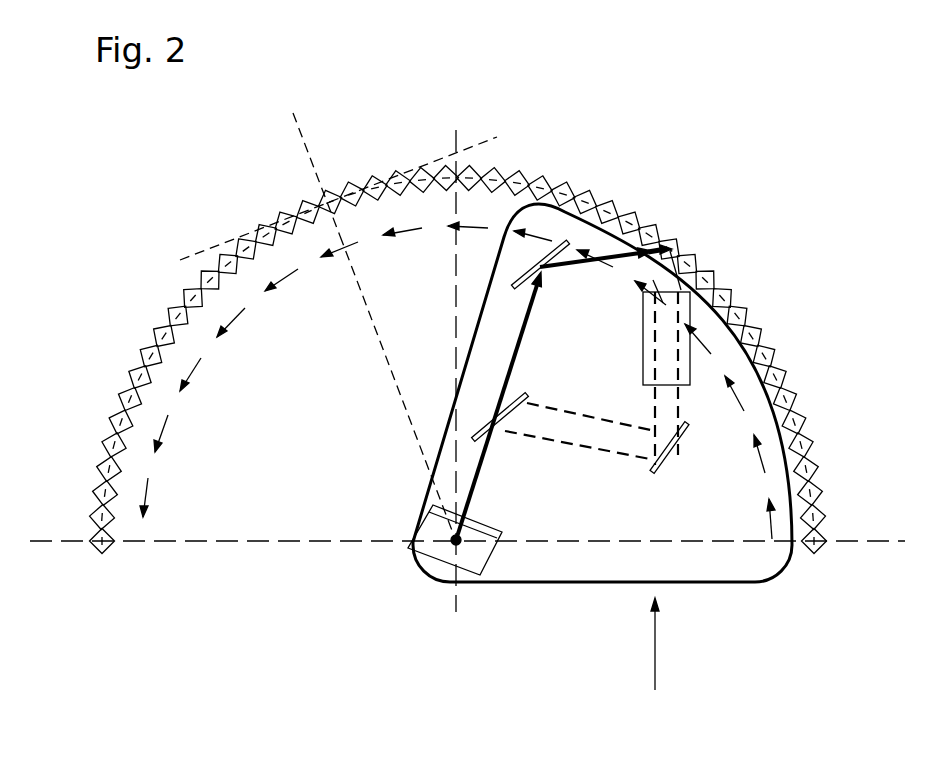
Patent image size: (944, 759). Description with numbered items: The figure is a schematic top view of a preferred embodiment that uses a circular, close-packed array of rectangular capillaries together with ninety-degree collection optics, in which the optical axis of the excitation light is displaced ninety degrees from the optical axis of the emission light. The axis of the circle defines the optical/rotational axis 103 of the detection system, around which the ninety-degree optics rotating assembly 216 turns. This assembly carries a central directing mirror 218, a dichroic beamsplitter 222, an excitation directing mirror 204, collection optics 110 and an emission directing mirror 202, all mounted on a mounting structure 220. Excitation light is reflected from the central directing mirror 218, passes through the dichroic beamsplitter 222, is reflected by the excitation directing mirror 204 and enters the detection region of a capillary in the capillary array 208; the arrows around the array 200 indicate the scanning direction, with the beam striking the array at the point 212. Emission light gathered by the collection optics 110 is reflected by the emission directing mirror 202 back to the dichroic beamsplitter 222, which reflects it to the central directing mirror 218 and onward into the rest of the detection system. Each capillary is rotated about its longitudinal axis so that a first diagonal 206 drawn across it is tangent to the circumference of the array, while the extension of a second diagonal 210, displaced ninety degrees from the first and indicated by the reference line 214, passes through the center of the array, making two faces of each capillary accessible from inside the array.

The optical/rotational axis 103 is at (453, 545).
The collection optics 110 is at (692, 313).
The array of retroreflective elements 200 is at (803, 417).
The emission directing mirror 202 is at (675, 450).
The excitation directing mirror 204 is at (553, 238).
The first diagonal 206 is at (198, 250).
The capillary array 208 is at (150, 343).
The second diagonal 210 is at (392, 364).
The beam impingement point 212 is at (643, 240).
The scan angle reference line 214 is at (307, 150).
The 90° optics rotating assembly 216 is at (651, 665).
The central directing mirror 218 is at (430, 508).
The mounting structure 220 is at (720, 582).
The dichroic beamsplitter 222 is at (505, 440).